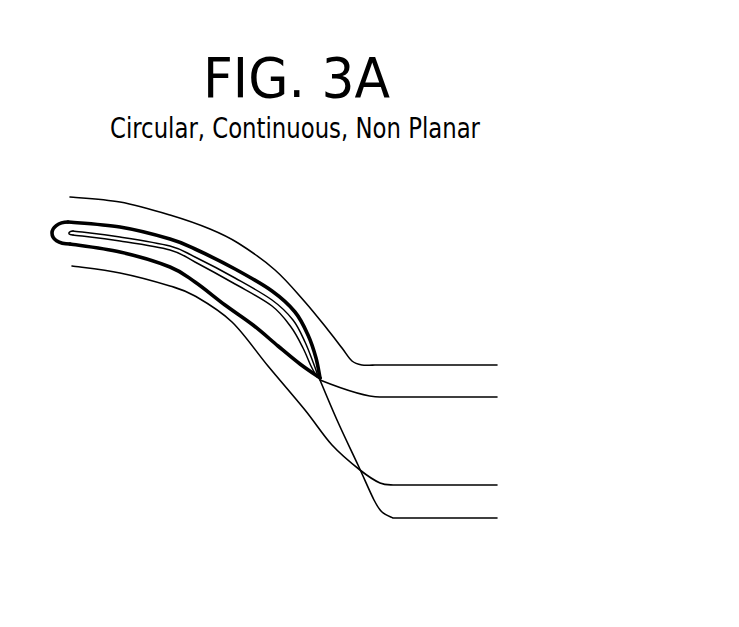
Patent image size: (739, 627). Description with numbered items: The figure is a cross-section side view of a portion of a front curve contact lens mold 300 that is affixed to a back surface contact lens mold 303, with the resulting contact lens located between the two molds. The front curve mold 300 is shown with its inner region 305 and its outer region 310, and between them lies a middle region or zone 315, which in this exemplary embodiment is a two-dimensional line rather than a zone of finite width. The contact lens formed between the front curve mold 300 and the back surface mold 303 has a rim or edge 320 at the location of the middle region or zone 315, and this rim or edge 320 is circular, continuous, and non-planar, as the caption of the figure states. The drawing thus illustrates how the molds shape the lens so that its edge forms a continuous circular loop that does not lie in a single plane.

The front curve contact lens mold 300 is at (223, 243).
The back surface contact lens mold 303 is at (177, 290).
The inner region 305 is at (283, 322).
The rim or edge 320 is at (337, 363).
The middle region or zone 315 is at (360, 391).
The outer region 310 is at (440, 401).